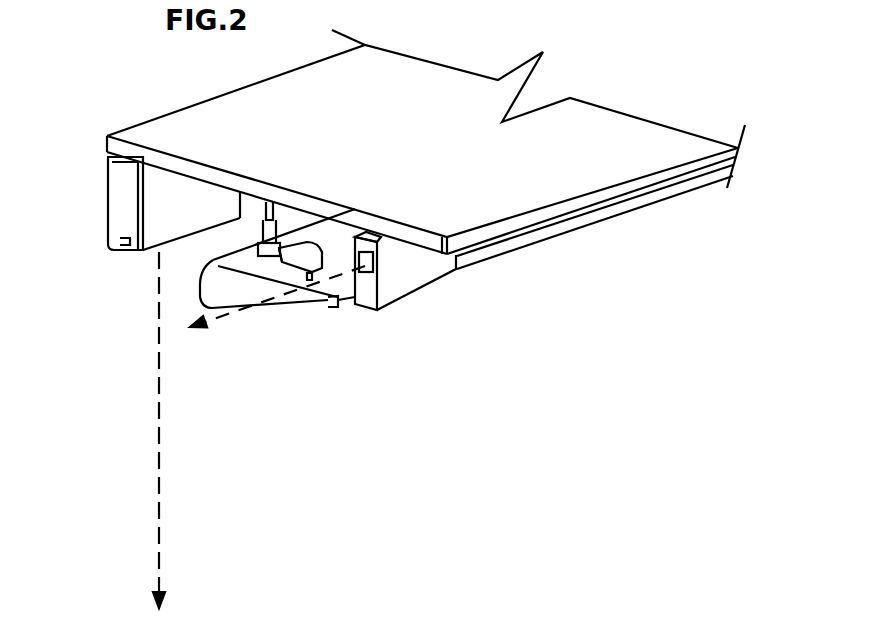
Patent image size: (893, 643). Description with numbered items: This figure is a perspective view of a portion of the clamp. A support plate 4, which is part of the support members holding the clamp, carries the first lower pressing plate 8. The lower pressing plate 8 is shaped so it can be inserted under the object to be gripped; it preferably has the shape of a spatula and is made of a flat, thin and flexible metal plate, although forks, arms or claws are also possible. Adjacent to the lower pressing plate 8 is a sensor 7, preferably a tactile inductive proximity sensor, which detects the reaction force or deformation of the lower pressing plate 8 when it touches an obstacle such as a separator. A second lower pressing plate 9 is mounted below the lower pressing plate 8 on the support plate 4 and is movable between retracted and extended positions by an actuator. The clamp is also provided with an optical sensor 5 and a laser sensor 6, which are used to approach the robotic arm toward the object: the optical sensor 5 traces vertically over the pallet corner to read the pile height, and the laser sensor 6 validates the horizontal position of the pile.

The support plate 4 is at (226, 112).
The optical sensor 5 is at (158, 232).
The laser sensor 6 is at (412, 265).
The sensor 7 is at (268, 249).
The first lower pressing plate 8 is at (224, 291).
The second lower pressing plate 9 is at (350, 315).